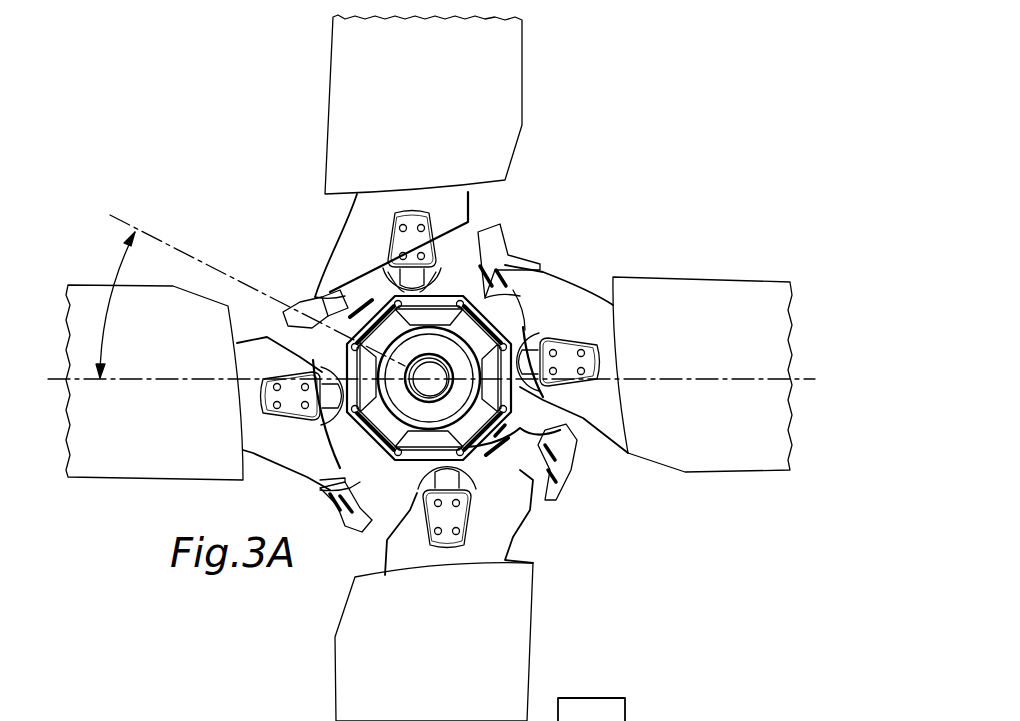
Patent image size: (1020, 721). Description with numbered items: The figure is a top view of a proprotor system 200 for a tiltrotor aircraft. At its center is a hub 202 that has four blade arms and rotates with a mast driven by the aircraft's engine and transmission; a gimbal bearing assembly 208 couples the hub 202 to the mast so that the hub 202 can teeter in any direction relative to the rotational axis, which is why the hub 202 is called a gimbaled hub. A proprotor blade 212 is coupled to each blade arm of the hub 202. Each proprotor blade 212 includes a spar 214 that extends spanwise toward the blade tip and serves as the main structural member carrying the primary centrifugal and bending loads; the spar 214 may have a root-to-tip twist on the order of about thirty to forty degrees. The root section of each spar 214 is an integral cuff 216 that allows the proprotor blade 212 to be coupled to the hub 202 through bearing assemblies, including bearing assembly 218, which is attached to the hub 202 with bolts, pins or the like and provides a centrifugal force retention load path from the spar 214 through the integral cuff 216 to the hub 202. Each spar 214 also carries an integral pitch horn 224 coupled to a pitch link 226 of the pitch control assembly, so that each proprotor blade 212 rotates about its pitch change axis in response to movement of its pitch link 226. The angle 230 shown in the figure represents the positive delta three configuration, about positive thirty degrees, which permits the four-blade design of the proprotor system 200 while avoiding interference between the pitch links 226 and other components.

The proprotor system 200 is at (627, 195).
The hub 202 is at (470, 232).
The gimbal bearing assembly 208 is at (513, 300).
The proprotor blade 212 is at (428, 95).
The spar 214 is at (410, 208).
The integral cuff 216 is at (372, 208).
The bearing assembly 218 is at (625, 716).
The integral pitch horn 224 is at (338, 252).
The pitch link 226 is at (283, 312).
The angle 230 is at (113, 305).